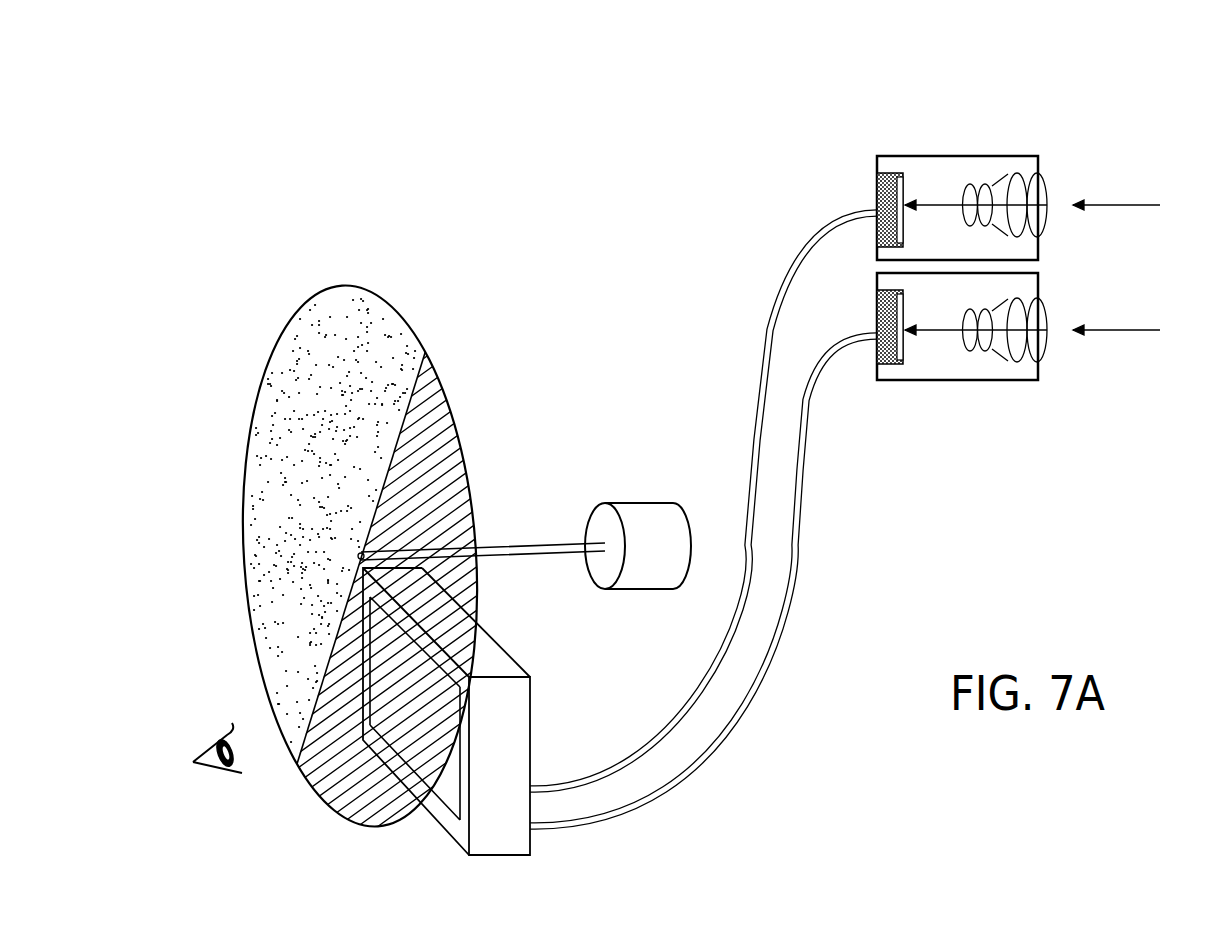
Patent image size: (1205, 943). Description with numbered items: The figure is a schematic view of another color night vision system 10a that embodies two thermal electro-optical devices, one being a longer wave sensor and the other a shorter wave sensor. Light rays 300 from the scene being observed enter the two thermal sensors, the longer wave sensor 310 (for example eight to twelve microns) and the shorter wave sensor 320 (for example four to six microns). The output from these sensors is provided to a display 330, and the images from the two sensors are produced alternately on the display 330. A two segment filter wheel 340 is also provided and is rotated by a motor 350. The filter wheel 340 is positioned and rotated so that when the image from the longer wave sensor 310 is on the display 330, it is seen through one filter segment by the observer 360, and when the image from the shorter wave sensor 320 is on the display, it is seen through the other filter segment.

The color night vision system 10a is at (1186, 66).
The light rays 300 is at (1120, 330).
The longer wave sensor 310 is at (960, 156).
The shorter wave sensor 320 is at (960, 380).
The display 330 is at (497, 855).
The two segment filter wheel 340 is at (340, 287).
The motor 350 is at (640, 578).
The observer 360 is at (207, 770).